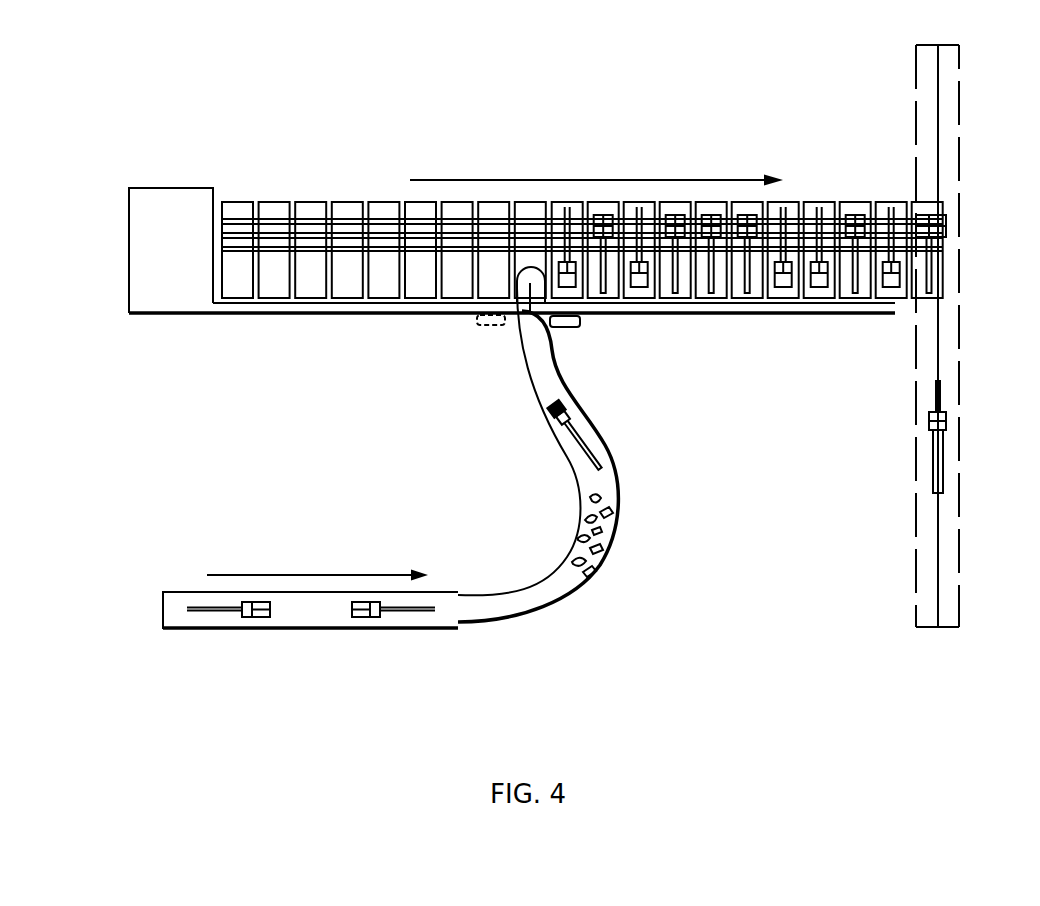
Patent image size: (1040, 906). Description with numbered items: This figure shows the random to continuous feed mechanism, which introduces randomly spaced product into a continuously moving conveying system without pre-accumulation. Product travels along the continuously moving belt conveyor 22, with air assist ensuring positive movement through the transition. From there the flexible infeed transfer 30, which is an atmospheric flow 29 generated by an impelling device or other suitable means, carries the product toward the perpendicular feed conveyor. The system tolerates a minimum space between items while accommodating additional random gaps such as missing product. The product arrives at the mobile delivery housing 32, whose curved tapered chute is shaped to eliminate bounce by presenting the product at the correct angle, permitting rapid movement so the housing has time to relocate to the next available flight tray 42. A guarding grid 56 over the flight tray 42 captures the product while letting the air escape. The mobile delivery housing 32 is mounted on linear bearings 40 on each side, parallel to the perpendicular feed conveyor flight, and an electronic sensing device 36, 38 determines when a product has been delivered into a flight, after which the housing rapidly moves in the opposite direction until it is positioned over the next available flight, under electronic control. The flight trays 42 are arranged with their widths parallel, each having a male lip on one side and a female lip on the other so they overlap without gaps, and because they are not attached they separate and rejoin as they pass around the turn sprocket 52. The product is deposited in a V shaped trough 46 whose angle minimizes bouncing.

The belt conveyor 22 is at (410, 630).
The atmospheric flow 29 is at (603, 560).
The flexible infeed transfer 30 is at (612, 513).
The mobile delivery housing 32 is at (535, 314).
The electronic sensing device 36 is at (488, 324).
The electronic sensing device 38 is at (580, 327).
The linear bearings 40 is at (252, 318).
The flight tray 42 is at (278, 283).
The V shaped trough 46 is at (950, 385).
The turn sprocket 52 is at (167, 285).
The guarding grid 56 is at (272, 218).